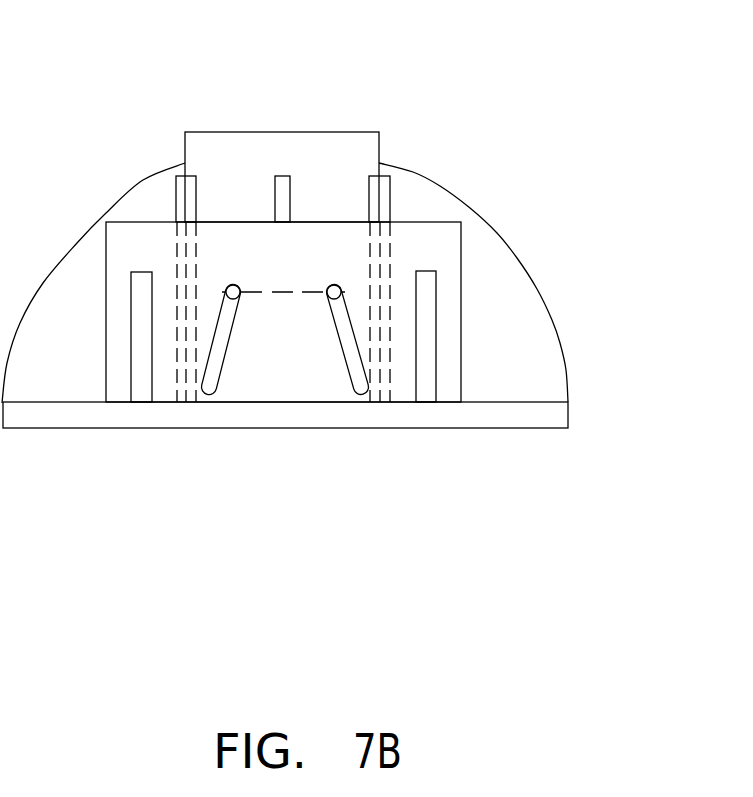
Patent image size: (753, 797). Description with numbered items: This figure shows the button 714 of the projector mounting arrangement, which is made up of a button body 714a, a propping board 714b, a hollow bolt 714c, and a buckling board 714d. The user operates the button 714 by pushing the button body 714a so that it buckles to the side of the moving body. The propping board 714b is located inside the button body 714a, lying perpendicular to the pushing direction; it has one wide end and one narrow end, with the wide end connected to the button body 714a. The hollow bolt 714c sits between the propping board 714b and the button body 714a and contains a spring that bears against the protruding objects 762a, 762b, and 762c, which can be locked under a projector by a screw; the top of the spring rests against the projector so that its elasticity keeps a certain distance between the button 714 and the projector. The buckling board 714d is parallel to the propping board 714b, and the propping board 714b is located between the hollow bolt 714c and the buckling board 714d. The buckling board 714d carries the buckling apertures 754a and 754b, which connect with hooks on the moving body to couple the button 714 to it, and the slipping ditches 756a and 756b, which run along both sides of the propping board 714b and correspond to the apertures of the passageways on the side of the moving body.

The button 714 is at (625, 112).
The button body 714a is at (416, 198).
The propping board 714b is at (282, 362).
The hollow bolt 714c is at (213, 145).
The buckling board 714d is at (449, 338).
The protruding object 762a is at (184, 176).
The protruding object 762b is at (288, 176).
The protruding object 762c is at (383, 176).
The buckling aperture 754a is at (141, 388).
The buckling aperture 754b is at (426, 386).
The slipping ditch 756a is at (234, 285).
The slipping ditch 756b is at (333, 285).